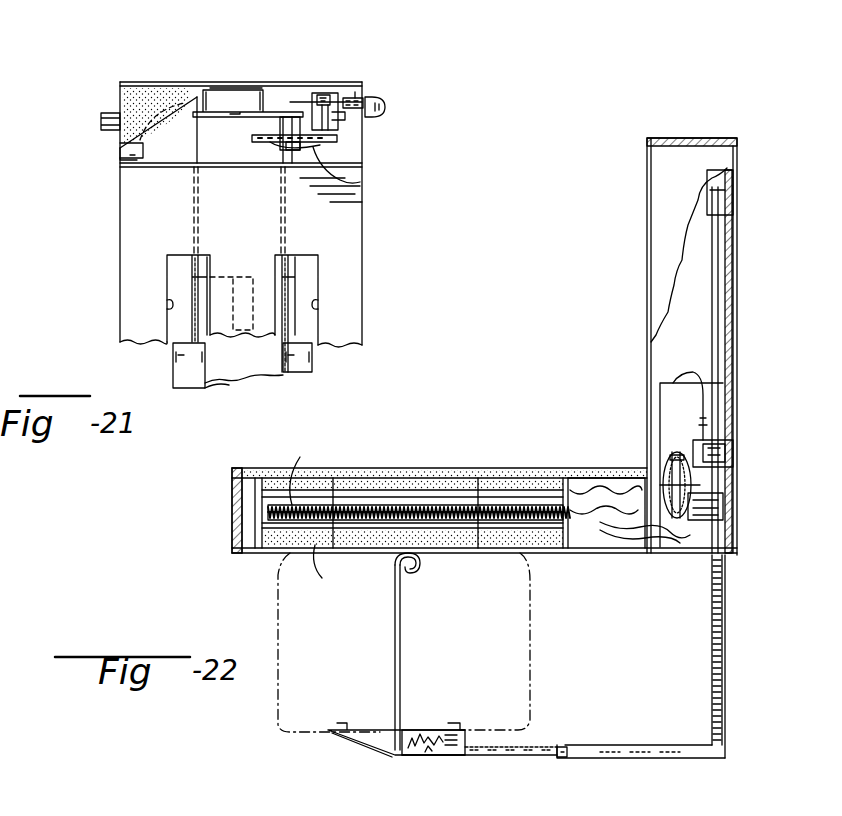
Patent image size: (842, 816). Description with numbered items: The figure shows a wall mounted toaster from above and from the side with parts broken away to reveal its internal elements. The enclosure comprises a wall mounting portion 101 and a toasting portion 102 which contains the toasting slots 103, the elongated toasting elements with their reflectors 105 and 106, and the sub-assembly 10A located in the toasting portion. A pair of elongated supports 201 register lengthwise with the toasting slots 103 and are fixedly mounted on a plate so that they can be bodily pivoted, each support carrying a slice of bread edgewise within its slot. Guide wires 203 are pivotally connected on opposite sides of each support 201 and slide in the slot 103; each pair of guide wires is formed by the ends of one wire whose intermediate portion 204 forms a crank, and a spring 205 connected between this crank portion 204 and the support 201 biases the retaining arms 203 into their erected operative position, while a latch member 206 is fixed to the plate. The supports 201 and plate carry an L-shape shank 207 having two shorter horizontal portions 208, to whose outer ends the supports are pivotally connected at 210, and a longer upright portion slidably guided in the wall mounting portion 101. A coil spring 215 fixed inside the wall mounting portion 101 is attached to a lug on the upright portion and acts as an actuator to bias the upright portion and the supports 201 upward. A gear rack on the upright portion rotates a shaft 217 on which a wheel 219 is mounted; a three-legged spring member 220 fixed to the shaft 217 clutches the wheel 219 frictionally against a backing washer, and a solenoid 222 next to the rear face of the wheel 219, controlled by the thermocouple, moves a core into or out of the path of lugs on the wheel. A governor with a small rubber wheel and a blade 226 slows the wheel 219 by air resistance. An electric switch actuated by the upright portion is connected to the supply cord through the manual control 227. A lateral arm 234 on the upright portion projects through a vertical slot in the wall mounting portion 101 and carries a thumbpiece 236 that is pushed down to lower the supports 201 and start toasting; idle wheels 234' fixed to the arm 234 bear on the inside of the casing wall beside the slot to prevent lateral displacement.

In FIG. 21, the wall mounting portion 101 is at (148, 180).
In FIG. 22, the wall mounting portion 101 is at (650, 176).
In FIG. 21, the toasting portion 102 is at (140, 227).
In FIG. 22, the toasting portion 102 is at (607, 470).
In FIG. 21, the toasting slots 103 is at (170, 303).
In FIG. 22, the toasting slots 103 is at (513, 475).
In FIG. 22, the spring sub-assembly 10A is at (311, 469).
In FIG. 22, the reflector 105 is at (317, 574).
In FIG. 22, the reflector 106 is at (393, 487).
In FIG. 21, the elongated supports 201 is at (312, 368).
In FIG. 22, the elongated supports 201 is at (378, 740).
In FIG. 22, the guide wires 203 is at (402, 606).
In FIG. 22, the intermediate portion 204 is at (425, 756).
In FIG. 22, the spring 205 is at (437, 725).
In FIG. 22, the latch member 206 is at (513, 757).
In FIG. 22, the L-shape shank 207 is at (708, 641).
In FIG. 21, the shorter horizontal portions 208 is at (206, 235).
In FIG. 22, the shorter horizontal portions 208 is at (605, 752).
In FIG. 22, the pivot connection 210 is at (560, 746).
In FIG. 21, the coil spring 215 is at (232, 95).
In FIG. 22, the coil spring 215 is at (718, 270).
In FIG. 21, the shaft 217 is at (275, 135).
In FIG. 21, the wheel 219 is at (278, 141).
In FIG. 22, the wheel 219 is at (700, 480).
In FIG. 21, the three-legged spring member 220 is at (360, 182).
In FIG. 21, the solenoid 222 is at (338, 118).
In FIG. 22, the solenoid 222 is at (723, 512).
In FIG. 22, the blade 226 is at (733, 446).
In FIG. 21, the manual control 227 is at (125, 152).
In FIG. 22, the manual control 227 is at (668, 399).
In FIG. 21, the lateral arm 234 is at (377, 71).
In FIG. 21, the idle wheels 234' is at (385, 80).
In FIG. 21, the thumbpiece 236 is at (383, 107).